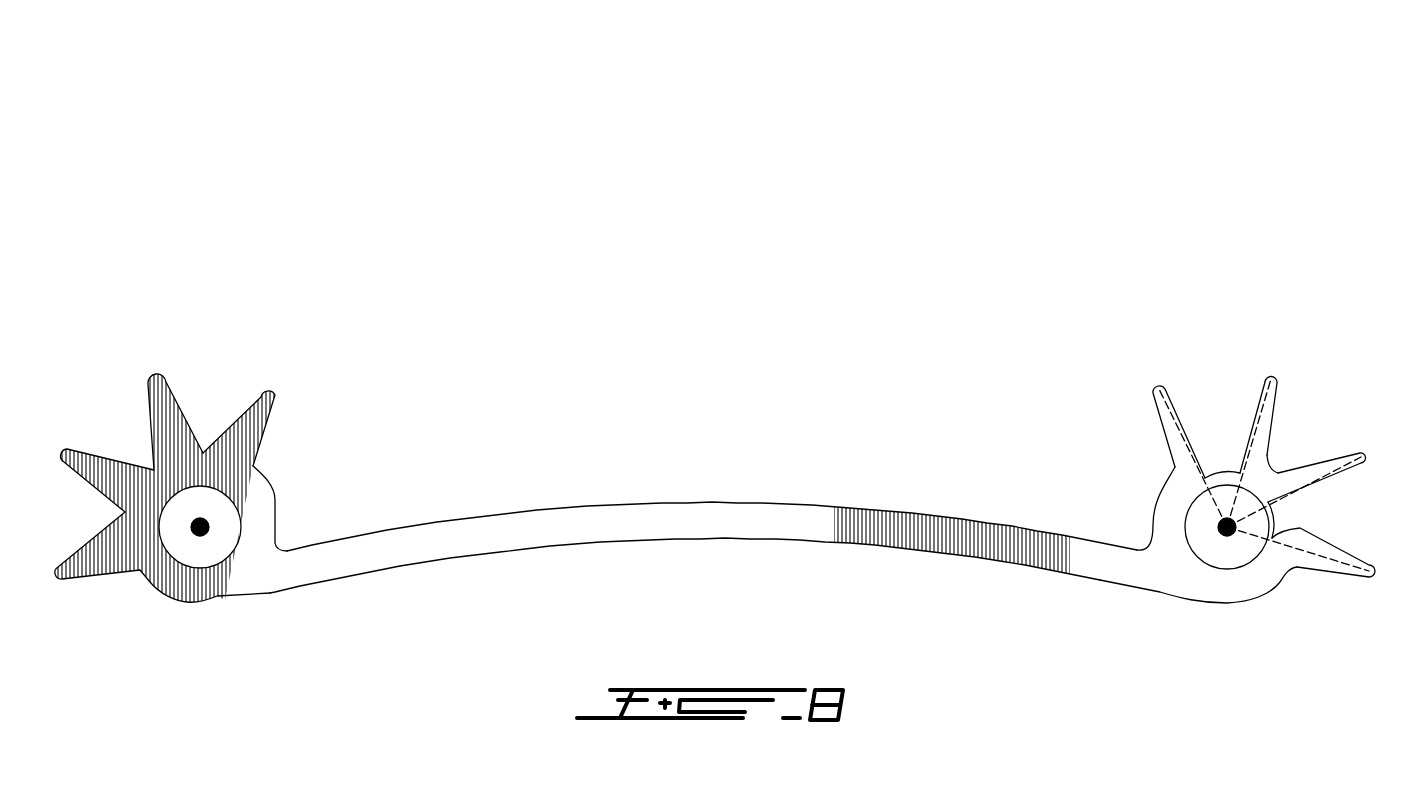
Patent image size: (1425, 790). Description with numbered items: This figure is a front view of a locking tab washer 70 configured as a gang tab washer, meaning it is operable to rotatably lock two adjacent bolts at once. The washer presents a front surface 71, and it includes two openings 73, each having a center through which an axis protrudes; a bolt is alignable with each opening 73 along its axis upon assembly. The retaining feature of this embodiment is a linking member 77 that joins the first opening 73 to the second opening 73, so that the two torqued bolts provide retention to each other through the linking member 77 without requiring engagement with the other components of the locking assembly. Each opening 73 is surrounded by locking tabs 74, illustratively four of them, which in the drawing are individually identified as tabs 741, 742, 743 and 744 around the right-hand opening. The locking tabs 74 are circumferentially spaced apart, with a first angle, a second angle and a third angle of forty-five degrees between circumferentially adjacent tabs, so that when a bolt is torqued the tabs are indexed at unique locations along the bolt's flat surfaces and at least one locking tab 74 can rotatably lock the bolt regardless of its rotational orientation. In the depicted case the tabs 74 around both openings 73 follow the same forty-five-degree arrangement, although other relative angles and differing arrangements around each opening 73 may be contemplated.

The locking tab washer 70 is at (383, 228).
The front surface 71 is at (157, 476).
The opening 73 is at (225, 543).
The locking tab 74 is at (260, 400).
The first finger 741 is at (1160, 387).
The second finger 742 is at (1277, 383).
The third finger 743 is at (1353, 452).
The fourth finger 744 is at (1360, 557).
The linking member 77 is at (735, 523).